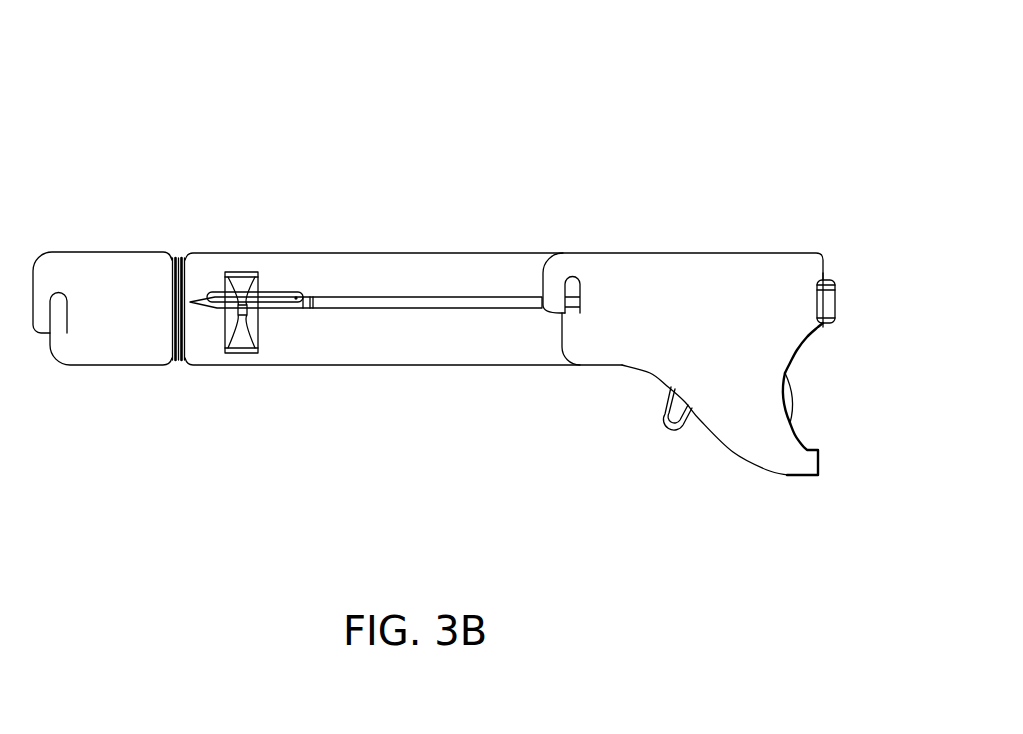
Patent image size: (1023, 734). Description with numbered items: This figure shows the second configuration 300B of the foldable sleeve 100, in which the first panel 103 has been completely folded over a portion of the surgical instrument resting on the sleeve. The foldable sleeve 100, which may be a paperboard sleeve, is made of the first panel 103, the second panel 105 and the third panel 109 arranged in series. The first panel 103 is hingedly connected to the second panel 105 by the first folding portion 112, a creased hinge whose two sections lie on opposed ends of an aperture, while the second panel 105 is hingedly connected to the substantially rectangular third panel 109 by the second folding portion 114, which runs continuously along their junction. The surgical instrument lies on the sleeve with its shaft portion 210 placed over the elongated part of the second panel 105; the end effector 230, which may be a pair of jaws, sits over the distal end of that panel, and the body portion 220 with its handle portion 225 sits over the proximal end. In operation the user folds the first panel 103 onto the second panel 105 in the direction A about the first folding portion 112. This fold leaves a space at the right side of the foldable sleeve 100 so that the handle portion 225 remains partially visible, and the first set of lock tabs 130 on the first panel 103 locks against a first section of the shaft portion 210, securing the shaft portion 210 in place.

The second configuration 300B is at (550, 89).
The foldable sleeve 100 is at (404, 222).
The first panel 103 is at (777, 460).
The second panel 105 is at (600, 365).
The third panel 109 is at (132, 342).
The first folding portion 112 is at (825, 272).
The second folding portion 114 is at (175, 260).
The first set of lock tabs 130 is at (572, 320).
The shaft portion 210 is at (465, 300).
The body portion 220 is at (823, 308).
The handle portion 225 is at (790, 399).
The end effector 230 is at (297, 292).
The direction of fold A is at (718, 532).